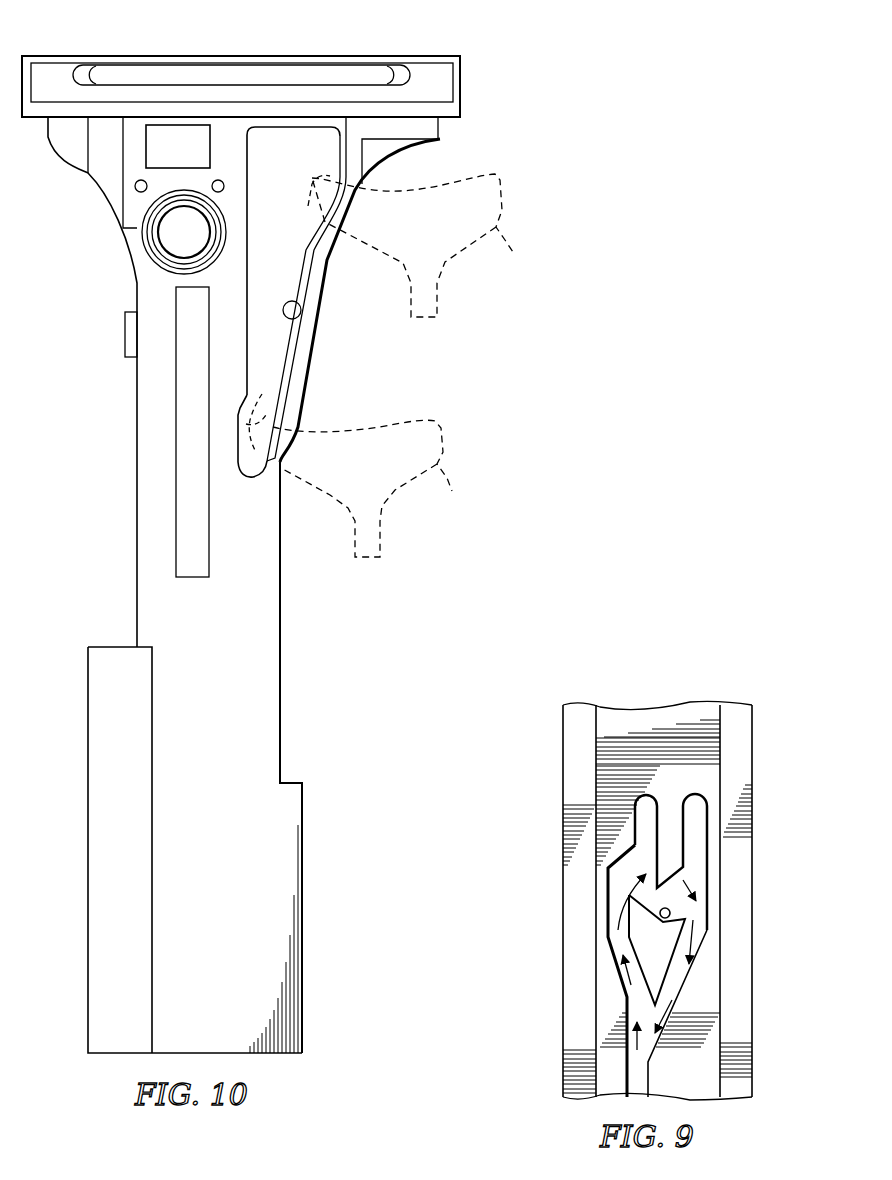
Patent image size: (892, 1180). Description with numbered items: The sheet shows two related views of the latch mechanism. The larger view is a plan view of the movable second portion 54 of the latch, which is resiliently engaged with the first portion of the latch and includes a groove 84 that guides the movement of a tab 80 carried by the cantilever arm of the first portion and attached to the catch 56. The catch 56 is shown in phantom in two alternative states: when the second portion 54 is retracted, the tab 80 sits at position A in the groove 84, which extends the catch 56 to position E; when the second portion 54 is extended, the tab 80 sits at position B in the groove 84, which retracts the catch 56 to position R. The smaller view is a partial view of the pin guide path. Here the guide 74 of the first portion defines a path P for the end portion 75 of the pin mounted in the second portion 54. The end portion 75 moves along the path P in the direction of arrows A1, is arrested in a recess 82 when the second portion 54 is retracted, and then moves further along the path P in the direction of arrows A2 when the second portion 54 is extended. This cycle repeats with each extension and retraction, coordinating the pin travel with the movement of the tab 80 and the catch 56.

In FIG. 10, the second portion 54 is at (88, 853).
In FIG. 10, the catch 56 is at (398, 365).
In FIG. 9, the guide 74 is at (683, 984).
In FIG. 9, the end portion 75 is at (670, 912).
In FIG. 10, the tab 80 is at (312, 192).
In FIG. 9, the recess 82 is at (682, 921).
In FIG. 10, the groove 84 is at (302, 320).
In FIG. 10, the position A is at (312, 172).
In FIG. 10, the position B is at (253, 461).
In FIG. 10, the position E is at (506, 195).
In FIG. 10, the position R is at (455, 442).
In FIG. 9, the directional arrows A1 is at (627, 898).
In FIG. 9, the directional arrows A2 is at (695, 948).
In FIG. 9, the path P is at (640, 1078).